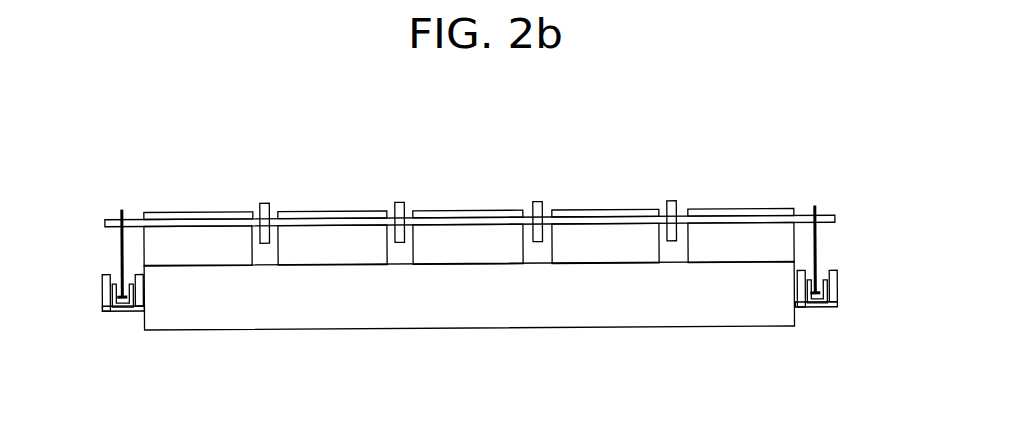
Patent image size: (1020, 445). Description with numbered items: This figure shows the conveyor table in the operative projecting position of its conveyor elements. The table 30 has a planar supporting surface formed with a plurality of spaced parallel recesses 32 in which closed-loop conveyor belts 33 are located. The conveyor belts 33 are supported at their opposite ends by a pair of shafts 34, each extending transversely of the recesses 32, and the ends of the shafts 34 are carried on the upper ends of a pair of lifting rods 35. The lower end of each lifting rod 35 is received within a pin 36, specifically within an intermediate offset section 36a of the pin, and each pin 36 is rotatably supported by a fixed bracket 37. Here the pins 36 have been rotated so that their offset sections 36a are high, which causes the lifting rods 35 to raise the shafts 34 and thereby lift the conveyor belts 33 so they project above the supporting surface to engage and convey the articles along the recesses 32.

The table 30 is at (282, 320).
The recesses 32 is at (272, 254).
The conveyor belts 33 is at (265, 203).
The shafts 34 is at (106, 223).
The lifting rods 35 is at (121, 247).
The pin 36 is at (110, 311).
The intermediate offset section 36a is at (140, 284).
The fixed bracket 37 is at (118, 314).